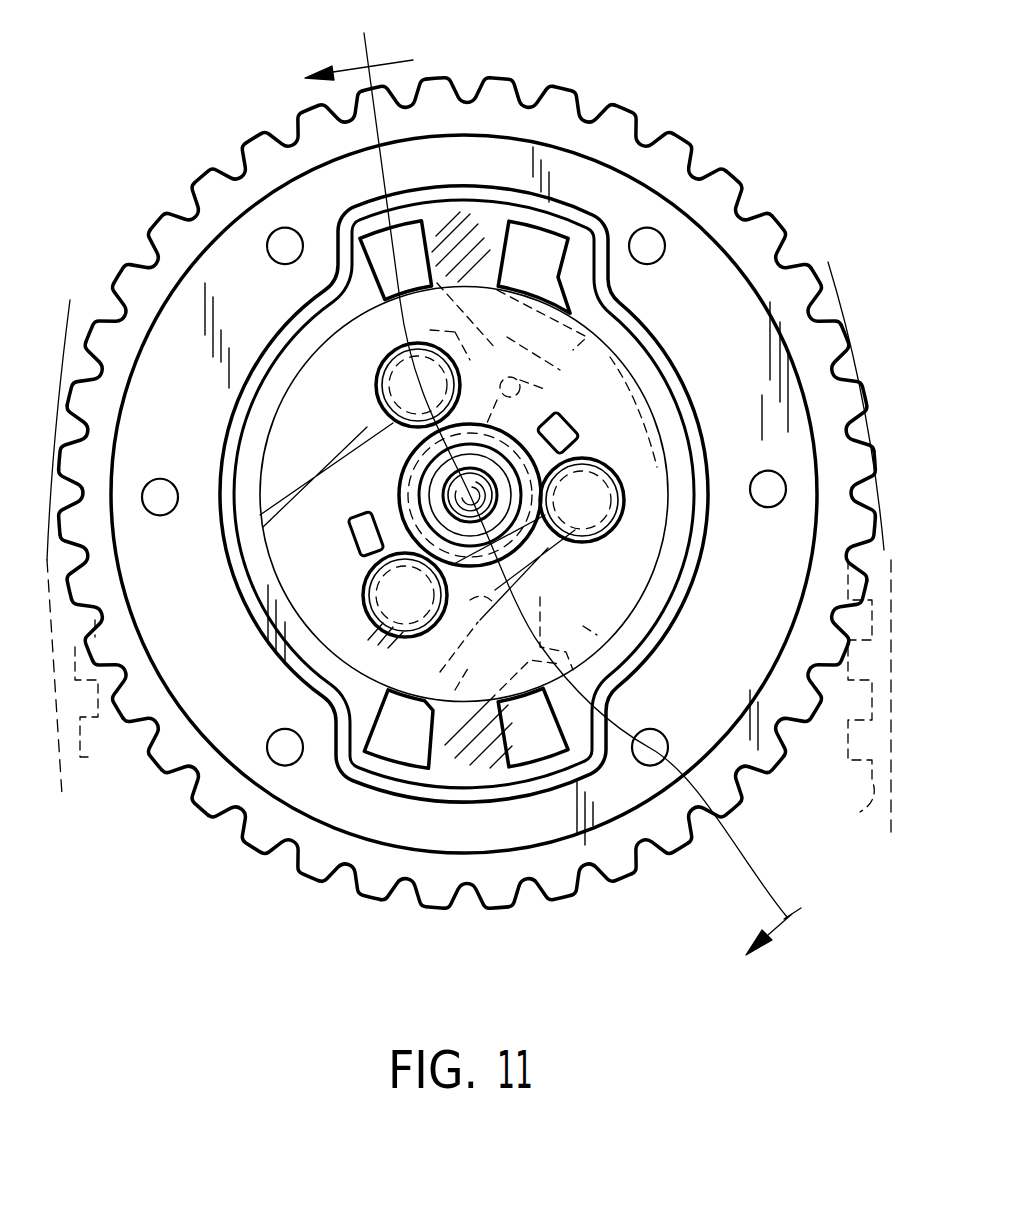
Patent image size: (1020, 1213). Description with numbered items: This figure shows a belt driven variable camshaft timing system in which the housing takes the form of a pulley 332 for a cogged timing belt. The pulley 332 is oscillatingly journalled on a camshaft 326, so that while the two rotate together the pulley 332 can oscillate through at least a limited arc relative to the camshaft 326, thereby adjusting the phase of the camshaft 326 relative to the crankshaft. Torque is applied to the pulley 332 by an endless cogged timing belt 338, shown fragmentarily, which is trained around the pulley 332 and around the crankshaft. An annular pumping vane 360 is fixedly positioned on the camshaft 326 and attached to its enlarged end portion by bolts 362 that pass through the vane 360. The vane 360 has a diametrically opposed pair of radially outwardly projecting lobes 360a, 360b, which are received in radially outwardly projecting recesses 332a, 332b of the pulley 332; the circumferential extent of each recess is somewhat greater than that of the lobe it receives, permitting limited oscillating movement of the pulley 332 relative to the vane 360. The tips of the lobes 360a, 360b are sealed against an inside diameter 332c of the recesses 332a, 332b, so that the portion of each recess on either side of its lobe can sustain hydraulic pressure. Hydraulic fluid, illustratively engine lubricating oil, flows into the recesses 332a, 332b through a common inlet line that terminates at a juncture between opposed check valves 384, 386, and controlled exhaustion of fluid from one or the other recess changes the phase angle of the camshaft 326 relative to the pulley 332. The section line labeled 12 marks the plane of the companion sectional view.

The section line 12- 12 is at (554, 503).
The camshaft 326 is at (388, 508).
The pulley 332 is at (722, 188).
The recess 332a is at (527, 263).
The recess 332b is at (540, 740).
The inside diameter 332c is at (397, 755).
The cogged timing belt 338 is at (862, 812).
The annular pumping vane 360 is at (655, 537).
The lobe 360a is at (485, 240).
The lobe 360b is at (473, 760).
The bolts 362 is at (337, 450).
The check valve 384 is at (555, 594).
The check valve 386 is at (605, 338).